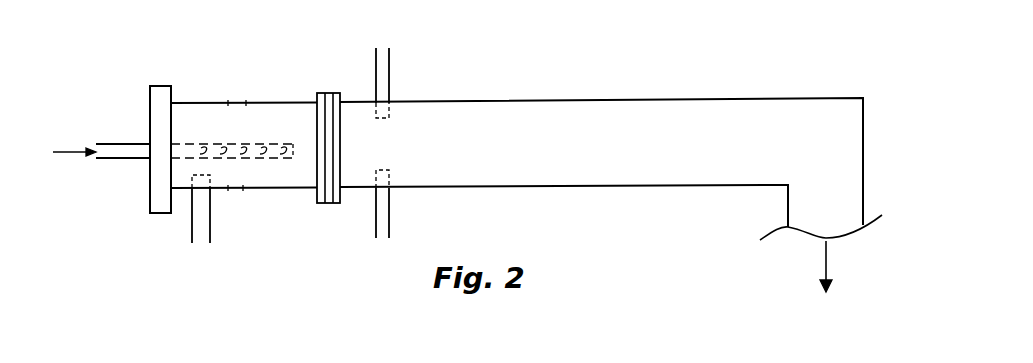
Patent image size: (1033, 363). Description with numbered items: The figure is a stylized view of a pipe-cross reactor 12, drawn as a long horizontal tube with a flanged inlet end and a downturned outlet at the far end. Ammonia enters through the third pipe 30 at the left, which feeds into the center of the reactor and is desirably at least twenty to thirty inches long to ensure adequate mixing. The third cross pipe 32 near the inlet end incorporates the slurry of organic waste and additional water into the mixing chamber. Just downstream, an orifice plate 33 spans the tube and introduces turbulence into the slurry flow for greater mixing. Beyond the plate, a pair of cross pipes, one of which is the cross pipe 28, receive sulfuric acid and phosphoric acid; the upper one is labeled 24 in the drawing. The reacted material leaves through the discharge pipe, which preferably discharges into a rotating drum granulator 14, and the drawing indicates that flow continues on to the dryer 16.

The pipe-cross reactor 12 is at (543, 99).
The rotating drum granulator 14 is at (822, 268).
The dryer 16 is at (628, 322).
The inlet pipe 24 is at (392, 58).
The cross pipe 28 is at (392, 218).
The third pipe 30 is at (66, 152).
The third cross pipe 32 is at (190, 232).
The orifice plate 33 is at (328, 204).